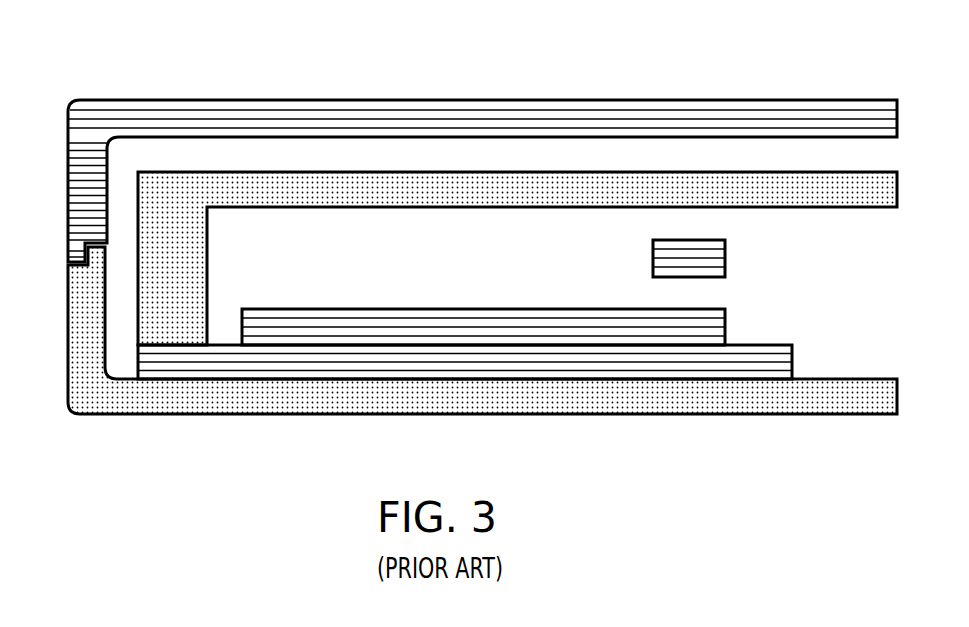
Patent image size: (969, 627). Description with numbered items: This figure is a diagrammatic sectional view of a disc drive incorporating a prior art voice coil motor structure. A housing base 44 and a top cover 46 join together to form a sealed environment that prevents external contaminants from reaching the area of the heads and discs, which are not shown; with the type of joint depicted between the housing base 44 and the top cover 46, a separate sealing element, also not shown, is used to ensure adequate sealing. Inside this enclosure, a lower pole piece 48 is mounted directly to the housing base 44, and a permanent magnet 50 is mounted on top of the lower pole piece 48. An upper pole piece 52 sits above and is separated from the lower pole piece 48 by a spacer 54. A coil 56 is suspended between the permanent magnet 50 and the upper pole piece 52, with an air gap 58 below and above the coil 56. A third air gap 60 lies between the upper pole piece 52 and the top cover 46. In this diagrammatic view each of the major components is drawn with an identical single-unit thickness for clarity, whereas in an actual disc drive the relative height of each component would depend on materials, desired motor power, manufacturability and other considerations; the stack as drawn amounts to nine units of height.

The housing base 44 is at (168, 415).
The top cover 46 is at (187, 108).
The lower pole piece 48 is at (243, 368).
The permanent magnet 50 is at (365, 335).
The upper pole piece 52 is at (312, 177).
The spacer 54 is at (160, 307).
The coil 56 is at (673, 240).
The air gap 58 is at (722, 223).
The third air gap 60 is at (772, 155).